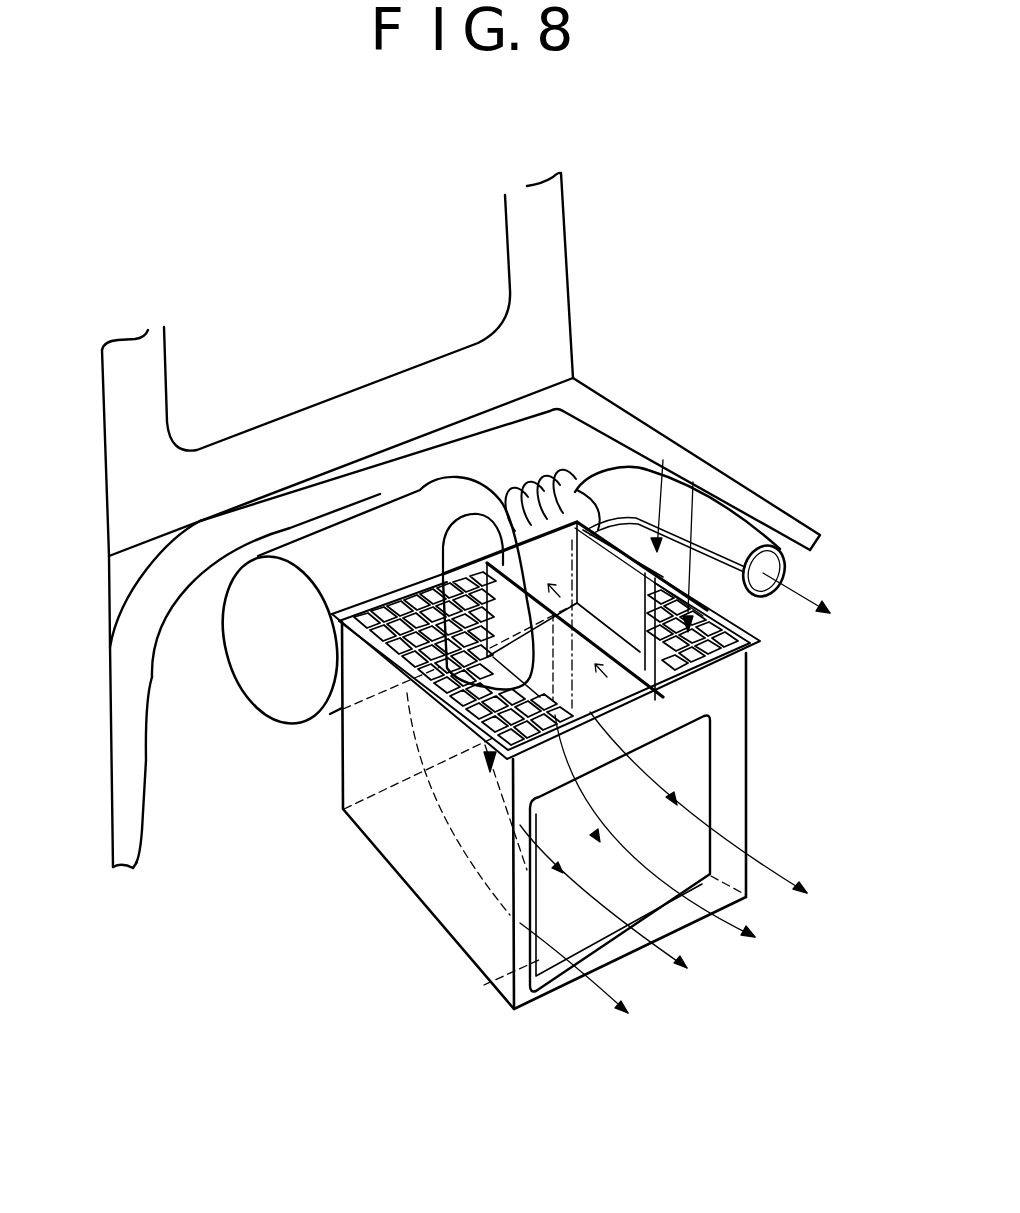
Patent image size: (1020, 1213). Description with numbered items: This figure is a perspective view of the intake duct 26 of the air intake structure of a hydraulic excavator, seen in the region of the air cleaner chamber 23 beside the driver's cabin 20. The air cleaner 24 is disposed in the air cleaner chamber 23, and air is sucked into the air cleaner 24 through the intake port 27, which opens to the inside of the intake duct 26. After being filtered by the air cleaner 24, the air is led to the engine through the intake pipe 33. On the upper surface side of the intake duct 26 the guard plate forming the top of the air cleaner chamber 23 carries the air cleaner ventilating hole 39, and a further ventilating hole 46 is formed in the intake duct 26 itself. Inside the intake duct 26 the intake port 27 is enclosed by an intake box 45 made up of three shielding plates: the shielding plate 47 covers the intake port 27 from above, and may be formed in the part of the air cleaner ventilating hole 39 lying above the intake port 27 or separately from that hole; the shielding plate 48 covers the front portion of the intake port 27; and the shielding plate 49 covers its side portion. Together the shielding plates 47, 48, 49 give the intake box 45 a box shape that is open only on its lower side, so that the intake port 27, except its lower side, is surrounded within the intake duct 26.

The driver's cabin 20 is at (567, 222).
The air cleaner chamber 23 is at (242, 795).
The air cleaner 24 is at (270, 677).
The intake duct 26 is at (398, 884).
The intake port 27 is at (578, 486).
The intake pipe 33 is at (745, 525).
The air cleaner ventilating hole 39 is at (414, 590).
The intake box 45 is at (605, 332).
The ventilating hole 46 is at (530, 928).
The shielding plate 47 is at (594, 560).
The shielding plate 48 is at (693, 482).
The shielding plate 49 is at (515, 510).